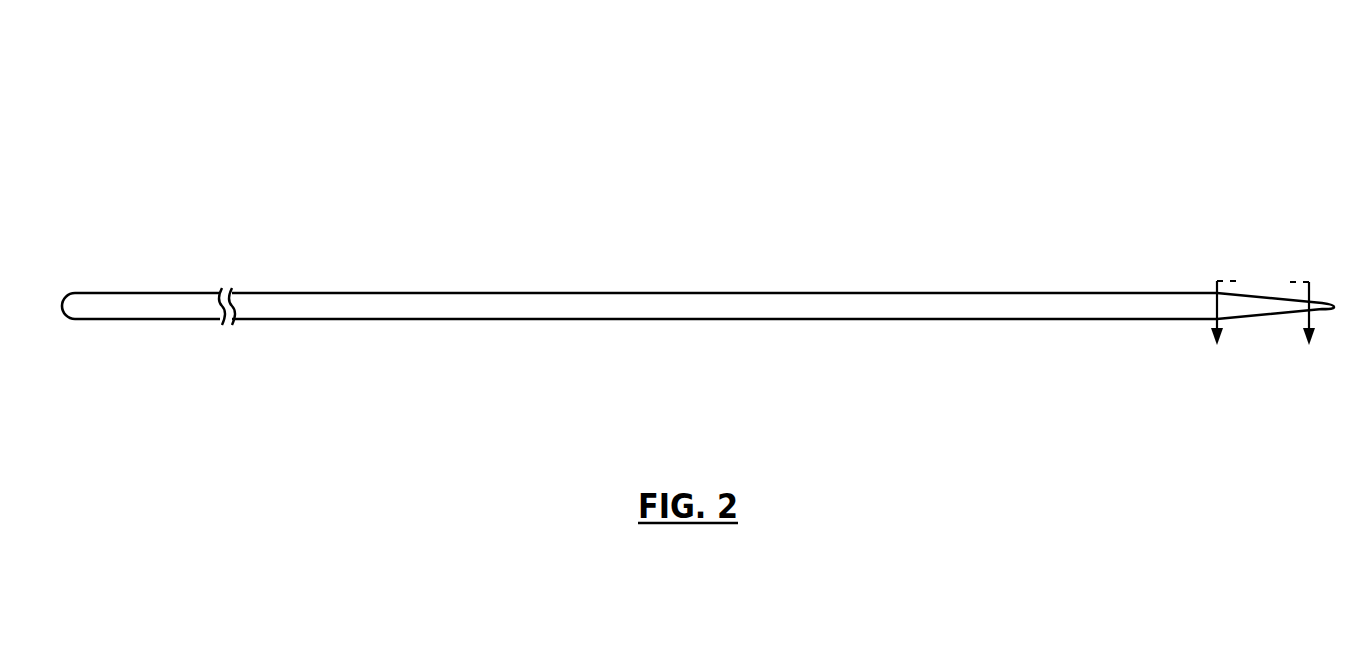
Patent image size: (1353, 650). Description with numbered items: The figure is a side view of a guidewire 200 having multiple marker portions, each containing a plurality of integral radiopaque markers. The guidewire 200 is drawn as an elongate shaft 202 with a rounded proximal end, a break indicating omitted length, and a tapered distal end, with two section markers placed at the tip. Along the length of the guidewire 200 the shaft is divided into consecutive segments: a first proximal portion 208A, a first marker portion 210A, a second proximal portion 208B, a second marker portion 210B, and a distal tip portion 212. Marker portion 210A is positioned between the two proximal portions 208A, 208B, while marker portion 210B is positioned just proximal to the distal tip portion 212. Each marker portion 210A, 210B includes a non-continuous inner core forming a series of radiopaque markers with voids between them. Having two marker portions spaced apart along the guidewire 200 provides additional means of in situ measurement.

The guidewire 200 is at (231, 103).
The elongate body / tubular shaft 202 is at (388, 320).
The proximal portion 208A is at (75, 253).
The marker portion 210A is at (373, 253).
The proximal portion 208B is at (653, 253).
The marker portion 210B is at (933, 253).
The distal tip portion 212 is at (1327, 253).